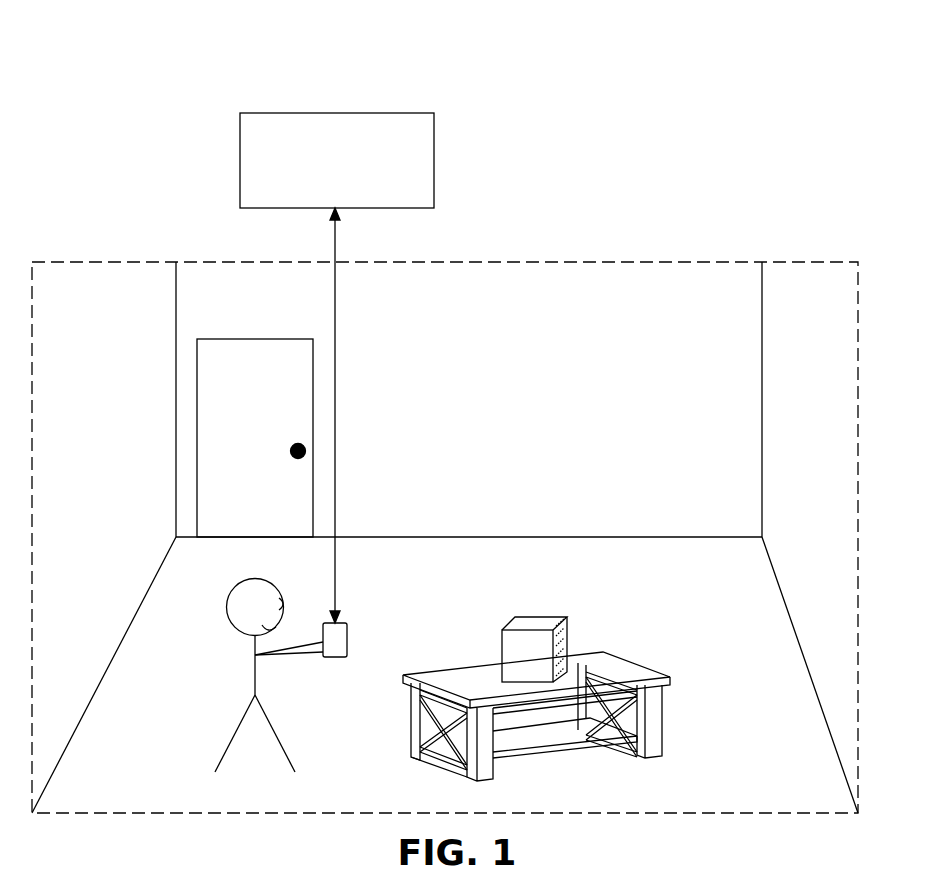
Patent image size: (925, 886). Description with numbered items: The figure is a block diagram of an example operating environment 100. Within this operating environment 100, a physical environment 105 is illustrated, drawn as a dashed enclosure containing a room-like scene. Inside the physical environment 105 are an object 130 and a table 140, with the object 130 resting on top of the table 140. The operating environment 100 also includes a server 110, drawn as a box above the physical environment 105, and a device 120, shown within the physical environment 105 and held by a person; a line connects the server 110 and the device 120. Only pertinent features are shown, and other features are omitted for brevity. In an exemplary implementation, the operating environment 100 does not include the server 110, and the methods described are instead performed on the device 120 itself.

The operating environment 100 is at (86, 35).
The physical environment 105 is at (445, 537).
The server 110 is at (337, 160).
The device 120 is at (347, 638).
The object 130 is at (520, 657).
The table 140 is at (600, 677).